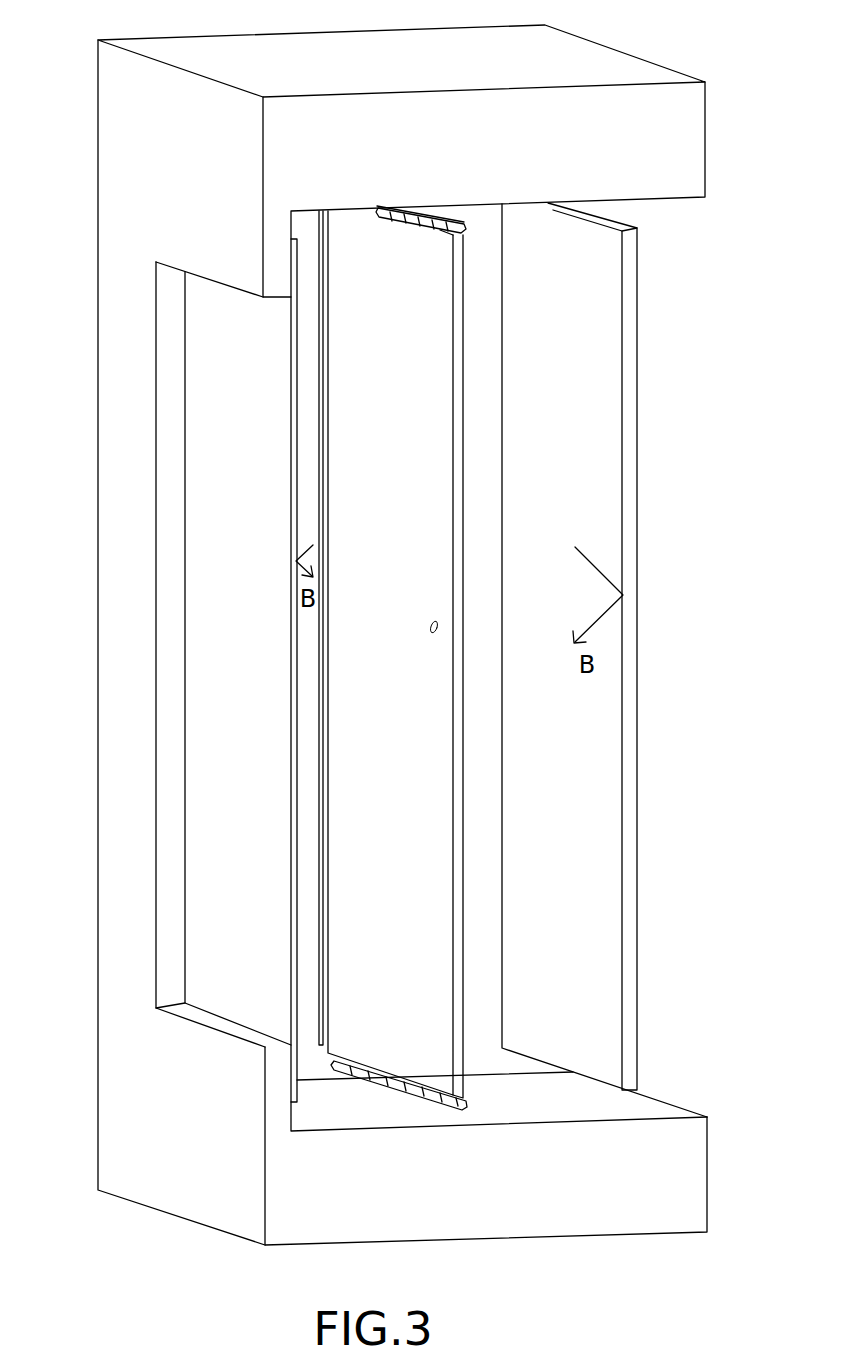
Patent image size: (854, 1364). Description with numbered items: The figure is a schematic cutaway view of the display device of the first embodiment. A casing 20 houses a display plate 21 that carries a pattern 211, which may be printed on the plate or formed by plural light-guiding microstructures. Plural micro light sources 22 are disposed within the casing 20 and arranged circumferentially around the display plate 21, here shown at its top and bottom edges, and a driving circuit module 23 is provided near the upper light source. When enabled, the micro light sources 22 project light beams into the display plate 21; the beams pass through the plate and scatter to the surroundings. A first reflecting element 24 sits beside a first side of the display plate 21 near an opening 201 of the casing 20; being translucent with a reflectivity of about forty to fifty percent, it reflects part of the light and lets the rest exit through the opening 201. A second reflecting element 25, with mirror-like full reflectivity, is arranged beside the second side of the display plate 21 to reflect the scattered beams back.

The casing 20 is at (603, 63).
The opening 201 is at (163, 968).
The display plate 21 is at (470, 1040).
The pattern 211 is at (425, 700).
The micro light sources 22 is at (405, 218).
The driving circuit module 23 is at (427, 211).
The first reflecting element 24 is at (215, 630).
The second reflecting element 25 is at (630, 420).